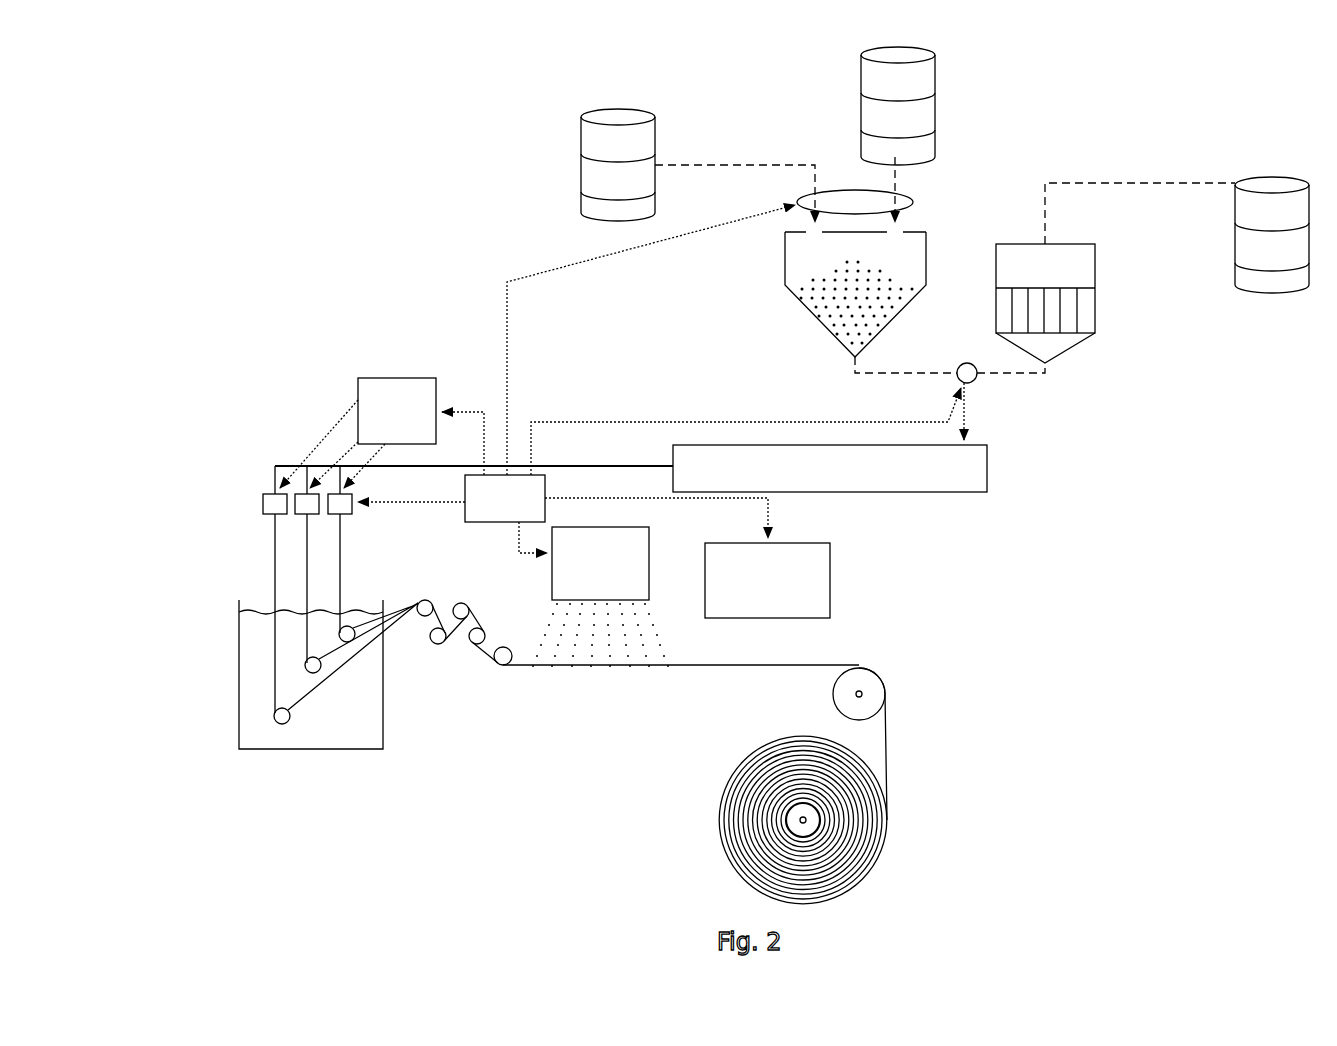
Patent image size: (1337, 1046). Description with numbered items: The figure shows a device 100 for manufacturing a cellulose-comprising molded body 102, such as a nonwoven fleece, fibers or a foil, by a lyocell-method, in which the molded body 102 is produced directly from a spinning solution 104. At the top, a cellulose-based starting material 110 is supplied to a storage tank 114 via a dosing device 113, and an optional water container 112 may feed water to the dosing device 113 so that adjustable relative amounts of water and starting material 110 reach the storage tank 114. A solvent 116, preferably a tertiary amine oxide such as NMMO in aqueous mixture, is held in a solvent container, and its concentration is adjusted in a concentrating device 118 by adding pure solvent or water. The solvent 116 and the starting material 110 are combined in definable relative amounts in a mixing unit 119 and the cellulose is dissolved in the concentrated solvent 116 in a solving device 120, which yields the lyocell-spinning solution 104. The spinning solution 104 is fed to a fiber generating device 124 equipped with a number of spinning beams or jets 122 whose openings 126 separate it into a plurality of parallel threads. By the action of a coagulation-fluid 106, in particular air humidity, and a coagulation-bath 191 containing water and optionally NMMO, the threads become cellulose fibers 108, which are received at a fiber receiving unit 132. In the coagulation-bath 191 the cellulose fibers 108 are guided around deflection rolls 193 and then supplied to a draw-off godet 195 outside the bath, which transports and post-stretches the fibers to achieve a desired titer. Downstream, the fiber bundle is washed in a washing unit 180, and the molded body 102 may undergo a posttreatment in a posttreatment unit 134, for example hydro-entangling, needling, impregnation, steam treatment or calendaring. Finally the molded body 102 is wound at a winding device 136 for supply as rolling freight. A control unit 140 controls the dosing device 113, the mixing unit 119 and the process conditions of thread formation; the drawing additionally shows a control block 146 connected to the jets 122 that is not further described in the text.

The device 100 is at (350, 166).
The molded body 102 is at (733, 795).
The spinning solution 104 is at (558, 467).
The coagulation-fluid 106 is at (253, 688).
The cellulose fibers 108 is at (820, 668).
The starting material 110 is at (619, 117).
The water container 112 is at (930, 72).
The dosing device 113 is at (850, 189).
The storage tank 114 is at (927, 232).
The solvent 116 is at (1273, 185).
The concentrating device 118 is at (1096, 262).
The mixing unit 119 is at (978, 377).
The solving device 120 is at (988, 470).
The jets 122 is at (336, 492).
The fiber generating device 124 is at (203, 502).
The openings 126 is at (318, 516).
The fiber receiving unit 132 is at (414, 745).
The posttreatment unit 134 is at (767, 580).
The winding device 136 is at (795, 822).
The control unit 140 is at (505, 498).
The sensor controller 146 is at (397, 411).
The washing unit 180 is at (600, 596).
The coagulation-bath 191 is at (230, 642).
The deflection roll 193 is at (353, 637).
The draw-off godet 195 is at (472, 590).